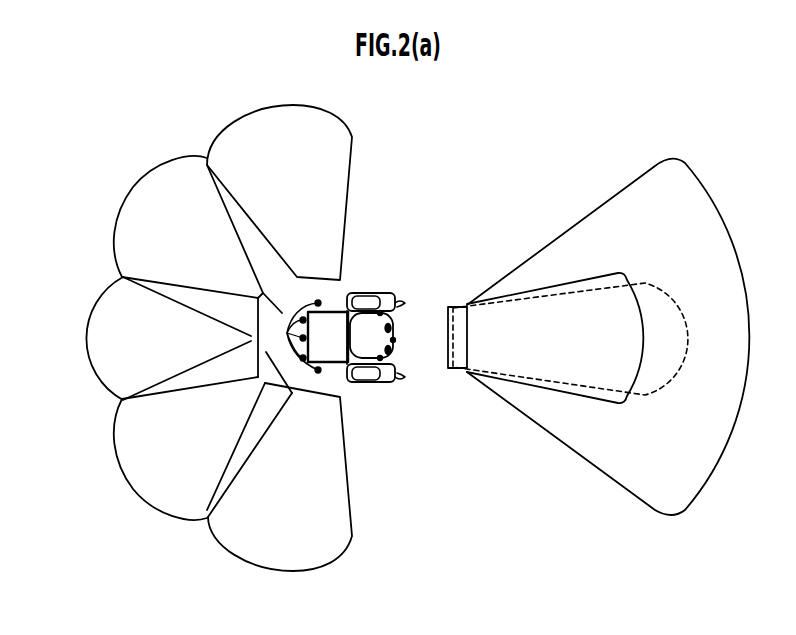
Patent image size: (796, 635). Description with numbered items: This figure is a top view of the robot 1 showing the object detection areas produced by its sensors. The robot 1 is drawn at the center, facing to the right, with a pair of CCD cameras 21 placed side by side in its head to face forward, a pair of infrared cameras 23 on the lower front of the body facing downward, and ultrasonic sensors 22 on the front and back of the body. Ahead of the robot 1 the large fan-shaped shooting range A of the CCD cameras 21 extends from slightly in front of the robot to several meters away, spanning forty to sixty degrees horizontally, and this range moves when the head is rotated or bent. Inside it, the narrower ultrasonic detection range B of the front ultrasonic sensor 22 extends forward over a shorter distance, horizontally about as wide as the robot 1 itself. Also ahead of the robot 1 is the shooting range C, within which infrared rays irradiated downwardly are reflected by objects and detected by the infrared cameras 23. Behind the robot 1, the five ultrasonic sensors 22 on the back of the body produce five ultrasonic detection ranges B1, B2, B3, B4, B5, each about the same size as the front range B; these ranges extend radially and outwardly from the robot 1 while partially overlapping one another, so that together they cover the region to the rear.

The robot 1 is at (363, 311).
The CCD cameras 21 is at (395, 328).
The ultrasonic sensors 22 is at (287, 333).
The infrared cameras 23 is at (414, 249).
The shooting range A is at (710, 182).
The ultrasonic detection range B is at (643, 282).
The shooting range C is at (588, 395).
The ultrasonic detection range B1 is at (260, 104).
The ultrasonic detection range B2 is at (133, 188).
The ultrasonic detection range B3 is at (88, 334).
The ultrasonic detection range B4 is at (113, 460).
The ultrasonic detection range B5 is at (255, 565).